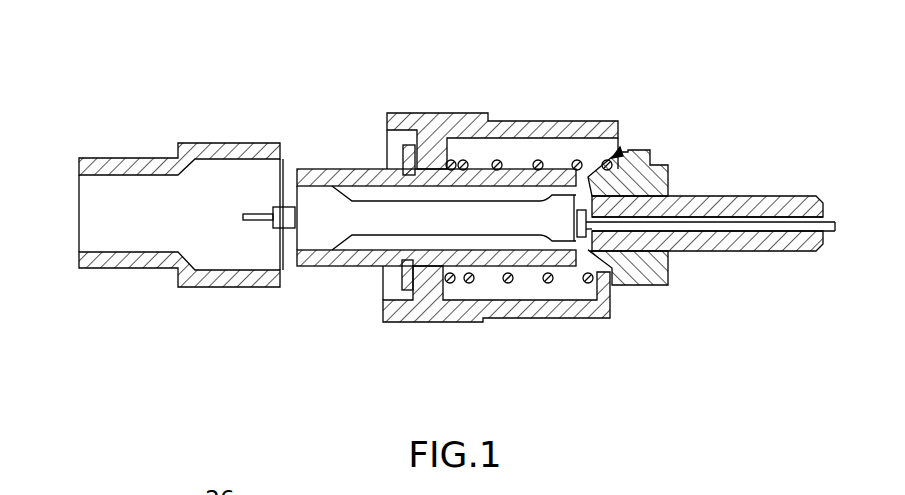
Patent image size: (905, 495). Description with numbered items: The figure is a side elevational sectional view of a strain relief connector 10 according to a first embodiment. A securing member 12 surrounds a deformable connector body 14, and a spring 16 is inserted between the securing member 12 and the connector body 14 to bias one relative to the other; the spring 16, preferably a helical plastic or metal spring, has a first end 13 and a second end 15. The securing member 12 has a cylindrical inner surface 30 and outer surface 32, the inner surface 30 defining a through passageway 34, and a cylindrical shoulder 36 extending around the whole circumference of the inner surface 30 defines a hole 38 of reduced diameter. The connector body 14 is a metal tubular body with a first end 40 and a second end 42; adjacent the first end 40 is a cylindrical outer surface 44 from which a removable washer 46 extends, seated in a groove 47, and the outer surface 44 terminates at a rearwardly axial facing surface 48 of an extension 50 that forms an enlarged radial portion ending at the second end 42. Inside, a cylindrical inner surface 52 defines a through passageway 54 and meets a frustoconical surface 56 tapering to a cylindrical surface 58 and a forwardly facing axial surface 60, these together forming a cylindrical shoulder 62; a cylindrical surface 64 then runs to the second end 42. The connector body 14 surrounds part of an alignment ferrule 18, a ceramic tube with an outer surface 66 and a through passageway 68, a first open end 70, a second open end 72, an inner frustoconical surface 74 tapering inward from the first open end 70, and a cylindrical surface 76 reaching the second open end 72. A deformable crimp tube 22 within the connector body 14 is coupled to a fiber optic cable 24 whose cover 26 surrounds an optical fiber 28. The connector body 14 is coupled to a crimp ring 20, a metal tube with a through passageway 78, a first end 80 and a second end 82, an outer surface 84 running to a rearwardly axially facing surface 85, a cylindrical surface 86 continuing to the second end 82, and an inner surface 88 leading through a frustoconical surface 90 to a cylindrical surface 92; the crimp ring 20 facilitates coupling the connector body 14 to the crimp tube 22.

The strain relief connector 10 is at (722, 378).
The securing member 12 is at (532, 320).
The first end of spring 13 is at (461, 287).
The deformable connector body 14 is at (320, 267).
The second end of spring 15 is at (588, 314).
The spring 16 is at (640, 160).
The alignment ferrule 18 is at (771, 196).
The crimp ring 20 is at (205, 288).
The deformable crimp tube 22 is at (345, 168).
The fiber optic cable 24 is at (287, 231).
The cover 26 is at (268, 250).
The optical fiber 28 is at (243, 226).
The inner surface 30 is at (596, 300).
The outer surface 32 is at (550, 121).
The through passageway 34 is at (612, 302).
The cylindrical shoulder 36 is at (378, 300).
The hole 38 is at (427, 293).
The first end 40 is at (289, 165).
The second end 42 is at (668, 182).
The outer surface 44 is at (356, 186).
The removable washer 46 is at (400, 283).
The groove 47 is at (402, 275).
The rearwardly axial facing surface 48 is at (605, 292).
The extension 50 is at (662, 285).
The inner surface 52 is at (482, 190).
The through passageway 54 is at (445, 190).
The frustoconical surface 56 is at (583, 186).
The cylindrical surface 58 is at (618, 150).
The forwardly facing axial surface 60 is at (650, 153).
The cylindrical shoulder 62 is at (505, 202).
The cylindrical surface 64 is at (668, 252).
The outer surface 66 is at (783, 252).
The through passageway 68 is at (835, 235).
The first open end 70 is at (475, 246).
The second open end 72 is at (822, 207).
The inner frustoconical surface 74 is at (575, 218).
The cylindrical surface 76 is at (742, 230).
The through passageway 78 is at (88, 210).
The first end 80 is at (80, 255).
The second end 82 is at (281, 148).
The outer surface 84 is at (120, 270).
The rearwardly axially facing surface 85 is at (179, 155).
The cylindrical surface 86 is at (186, 145).
The inner surface 88 is at (110, 250).
The frustoconical surface 90 is at (184, 180).
The cylindrical surface 92 is at (237, 160).